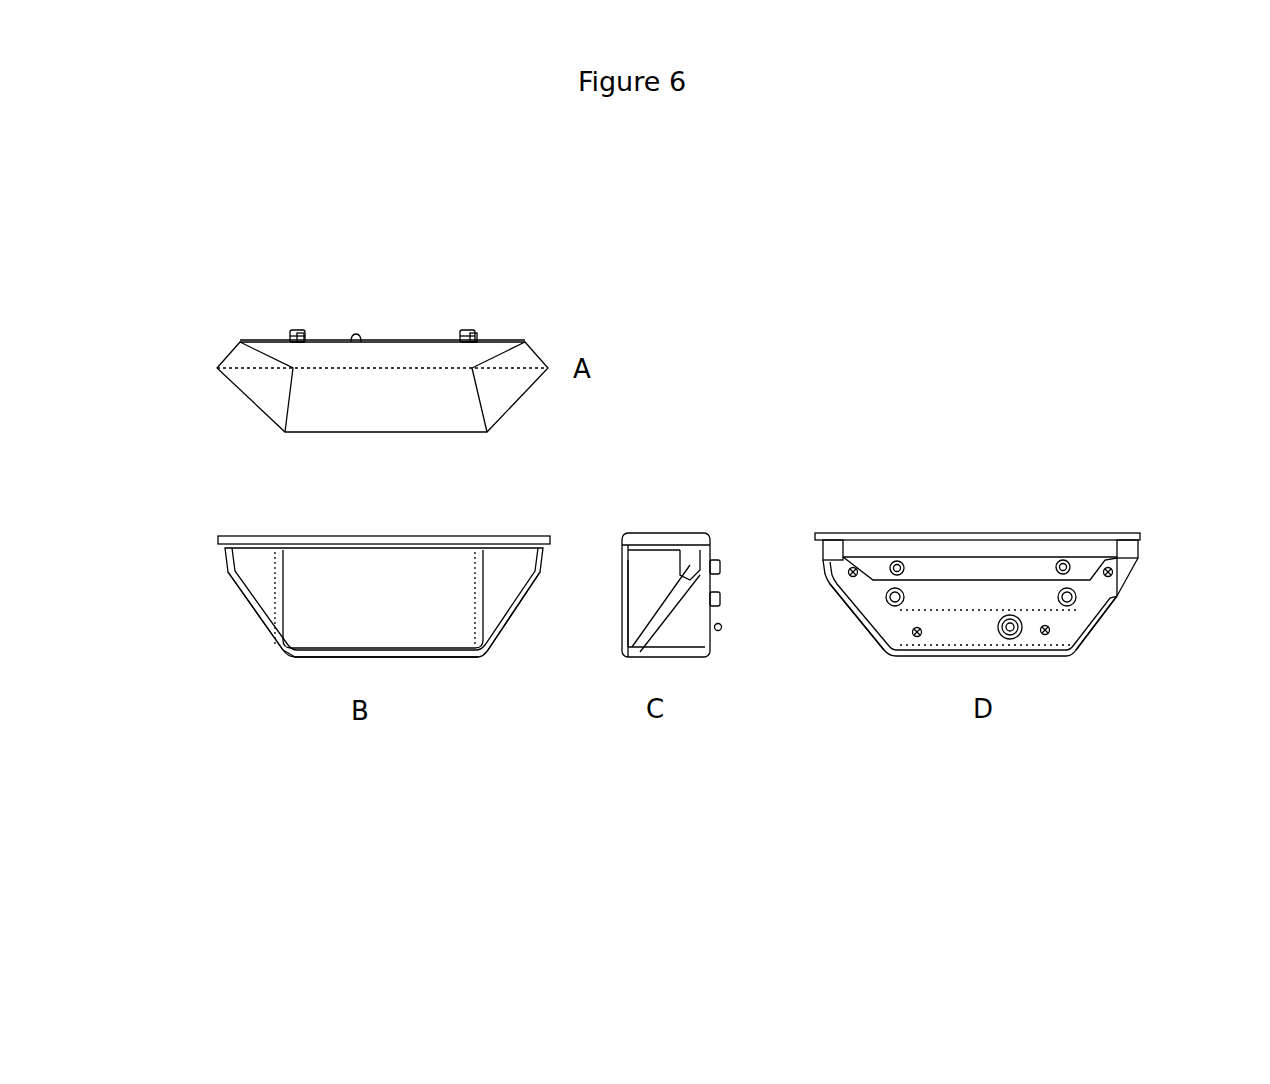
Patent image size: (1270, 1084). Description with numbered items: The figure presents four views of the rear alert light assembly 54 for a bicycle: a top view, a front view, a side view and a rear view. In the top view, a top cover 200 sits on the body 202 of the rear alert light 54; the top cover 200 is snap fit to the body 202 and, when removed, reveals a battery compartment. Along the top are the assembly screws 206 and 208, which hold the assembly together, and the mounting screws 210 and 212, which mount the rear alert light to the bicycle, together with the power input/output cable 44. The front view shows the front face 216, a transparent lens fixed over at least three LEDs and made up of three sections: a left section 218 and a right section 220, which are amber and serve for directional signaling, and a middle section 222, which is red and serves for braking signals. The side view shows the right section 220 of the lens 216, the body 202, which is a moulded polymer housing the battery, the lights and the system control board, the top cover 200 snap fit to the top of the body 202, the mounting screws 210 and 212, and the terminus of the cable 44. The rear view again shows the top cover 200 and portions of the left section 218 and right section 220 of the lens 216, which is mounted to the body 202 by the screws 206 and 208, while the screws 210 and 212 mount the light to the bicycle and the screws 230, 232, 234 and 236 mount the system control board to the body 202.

In FIG. 6A, the power input/output cable 44 is at (352, 332).
In FIG. 6C, the power input/output cable 44 is at (725, 633).
In FIG. 6D, the power input/output cable 44 is at (1010, 627).
In FIG. 6A, the rear alert light assembly 54 is at (537, 330).
In FIG. 6B, the rear alert light assembly 54 is at (500, 515).
In FIG. 6C, the rear alert light assembly 54 is at (708, 513).
In FIG. 6D, the rear alert light assembly 54 is at (977, 536).
In FIG. 6A, the top cover 200 is at (502, 388).
In FIG. 6B, the top cover 200 is at (335, 532).
In FIG. 6C, the top cover 200 is at (672, 528).
In FIG. 6D, the top cover 200 is at (1130, 540).
In FIG. 6C, the body 202 is at (682, 628).
In FIG. 6A, the assembly screw 206 is at (300, 337).
In FIG. 6D, the assembly screw 206 is at (897, 568).
In FIG. 6A, the assembly screw 208 is at (477, 328).
In FIG. 6C, the assembly screw 208 is at (722, 566).
In FIG. 6D, the assembly screw 208 is at (1063, 567).
In FIG. 6A, the mounting screw 210 is at (293, 327).
In FIG. 6D, the mounting screw 210 is at (905, 597).
In FIG. 6A, the mounting screw 212 is at (462, 325).
In FIG. 6C, the mounting screw 212 is at (725, 597).
In FIG. 6D, the mounting screw 212 is at (1073, 600).
In FIG. 6B, the front face transparent lens 216 is at (313, 673).
In FIG. 6C, the front face transparent lens 216 is at (640, 587).
In FIG. 6B, the left section 218 is at (267, 590).
In FIG. 6D, the left section 218 is at (835, 582).
In FIG. 6B, the right section 220 is at (512, 588).
In FIG. 6C, the right section 220 is at (640, 603).
In FIG. 6D, the right section 220 is at (1127, 577).
In FIG. 6B, the middle section 222 is at (412, 628).
In FIG. 6D, the screw 230 is at (853, 572).
In FIG. 6D, the screw 232 is at (917, 632).
In FIG. 6D, the screw 234 is at (1045, 630).
In FIG. 6D, the screw 236 is at (1108, 570).